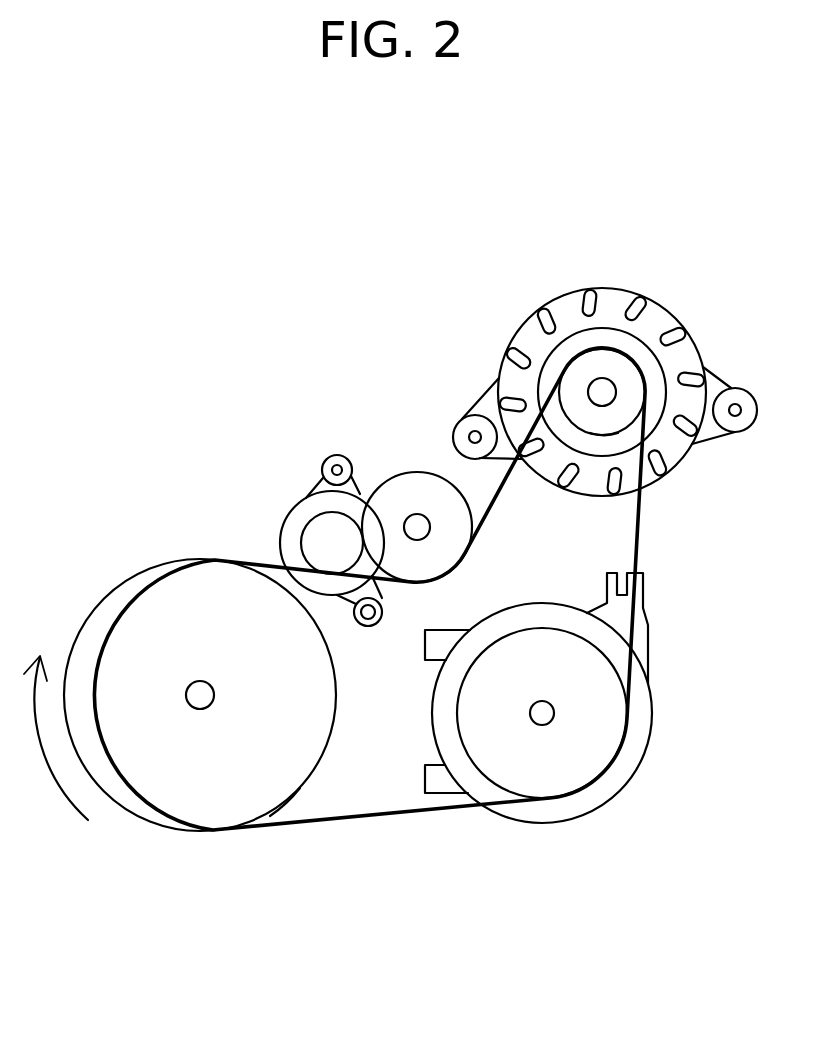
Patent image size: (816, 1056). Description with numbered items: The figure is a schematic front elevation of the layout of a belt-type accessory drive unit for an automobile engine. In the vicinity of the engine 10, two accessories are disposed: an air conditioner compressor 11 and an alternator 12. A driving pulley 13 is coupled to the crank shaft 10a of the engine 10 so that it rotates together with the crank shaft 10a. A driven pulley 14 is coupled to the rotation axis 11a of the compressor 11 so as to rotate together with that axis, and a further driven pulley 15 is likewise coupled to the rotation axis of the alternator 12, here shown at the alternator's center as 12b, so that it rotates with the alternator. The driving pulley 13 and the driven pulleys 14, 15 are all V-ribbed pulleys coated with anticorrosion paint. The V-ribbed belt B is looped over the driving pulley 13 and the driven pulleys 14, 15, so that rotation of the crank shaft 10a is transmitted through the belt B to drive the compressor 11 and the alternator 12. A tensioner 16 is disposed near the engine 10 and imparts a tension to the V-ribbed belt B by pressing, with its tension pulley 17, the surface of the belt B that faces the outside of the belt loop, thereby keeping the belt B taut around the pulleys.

The engine 10 is at (194, 681).
The crank shaft 10a is at (206, 710).
The air conditioner compressor 11 is at (651, 722).
The rotation axis 11a is at (554, 718).
The alternator 12 is at (565, 290).
The alternator pulley 12b is at (608, 380).
The driving pulley 13 is at (297, 790).
The driven pulley 14 is at (505, 790).
The driven pulley 15 is at (618, 433).
The tensioner 16 is at (290, 506).
The tension pulley 17 is at (392, 468).
The V-ribbed belt B is at (328, 820).